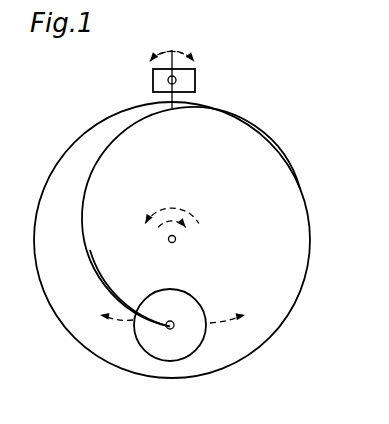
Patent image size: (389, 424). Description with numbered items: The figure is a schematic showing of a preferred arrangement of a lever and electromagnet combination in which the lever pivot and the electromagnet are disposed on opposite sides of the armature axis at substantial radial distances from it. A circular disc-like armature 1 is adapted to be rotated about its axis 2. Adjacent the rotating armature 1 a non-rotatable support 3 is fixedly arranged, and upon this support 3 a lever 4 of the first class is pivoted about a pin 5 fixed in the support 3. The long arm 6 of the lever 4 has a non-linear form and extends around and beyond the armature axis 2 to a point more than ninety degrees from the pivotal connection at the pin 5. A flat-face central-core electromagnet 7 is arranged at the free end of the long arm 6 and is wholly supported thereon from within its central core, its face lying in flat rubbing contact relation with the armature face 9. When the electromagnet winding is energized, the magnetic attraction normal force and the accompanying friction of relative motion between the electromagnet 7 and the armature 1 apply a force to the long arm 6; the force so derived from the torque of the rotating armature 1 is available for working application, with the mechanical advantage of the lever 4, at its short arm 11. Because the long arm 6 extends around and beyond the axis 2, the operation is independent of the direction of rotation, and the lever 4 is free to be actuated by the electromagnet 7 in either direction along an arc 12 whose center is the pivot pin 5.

The armature 1 is at (294, 168).
The armature axis 2 is at (198, 225).
The non-rotatable support 3 is at (195, 75).
The lever 4 is at (82, 213).
The pin 5 is at (168, 79).
The long arm 6 is at (118, 292).
The electromagnet 7 is at (198, 303).
The armature face 9 is at (212, 348).
The short arm 11 is at (197, 65).
The arc 12 is at (179, 50).